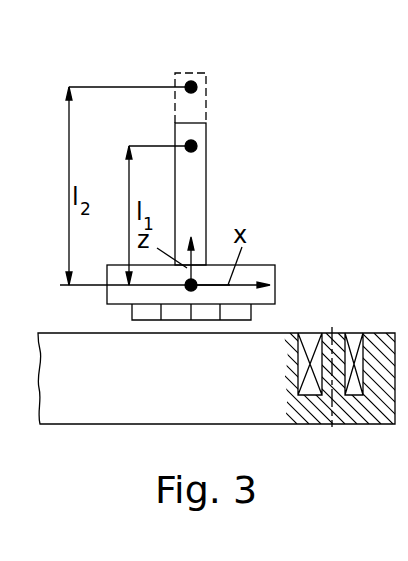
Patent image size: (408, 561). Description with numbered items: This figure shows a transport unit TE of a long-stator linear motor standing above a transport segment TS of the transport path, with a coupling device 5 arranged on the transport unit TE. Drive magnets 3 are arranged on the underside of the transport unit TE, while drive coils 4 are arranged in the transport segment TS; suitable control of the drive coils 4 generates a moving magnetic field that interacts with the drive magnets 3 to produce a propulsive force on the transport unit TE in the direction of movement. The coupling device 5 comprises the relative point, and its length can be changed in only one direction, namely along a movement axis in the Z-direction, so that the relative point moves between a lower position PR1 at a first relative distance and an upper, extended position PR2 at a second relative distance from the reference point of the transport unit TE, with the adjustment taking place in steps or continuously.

The drive magnets 3 is at (140, 314).
The drive coils 4 is at (352, 347).
The coupling device 5 is at (190, 131).
The transport unit TE is at (273, 267).
The transport segment TS is at (98, 377).
The relative point at first relative distance PR1 is at (195, 146).
The relative point at second relative distance PR2 is at (186, 82).